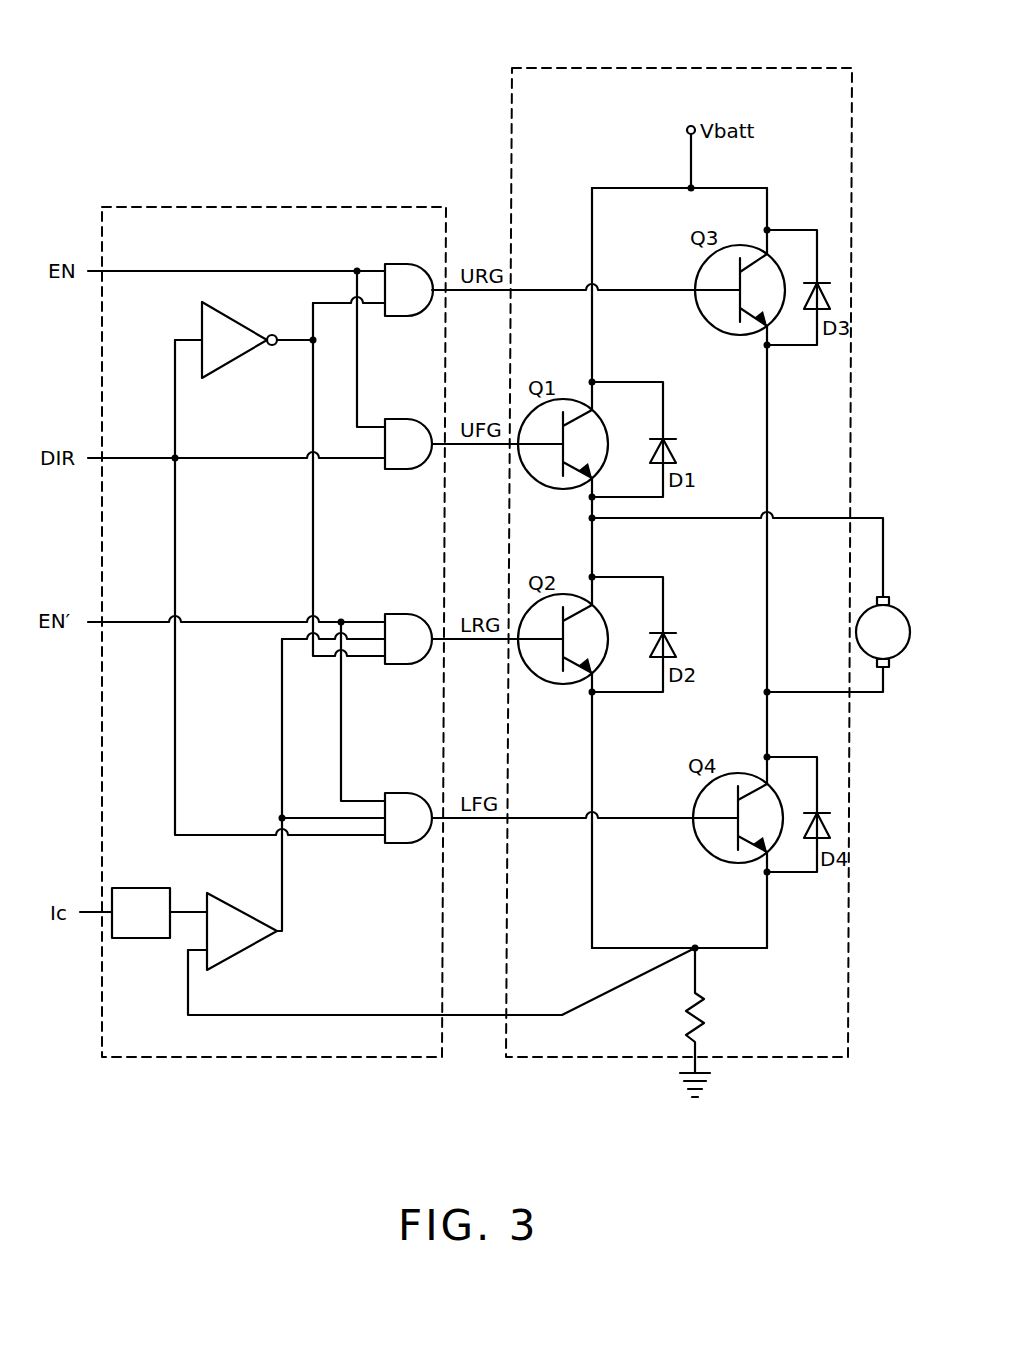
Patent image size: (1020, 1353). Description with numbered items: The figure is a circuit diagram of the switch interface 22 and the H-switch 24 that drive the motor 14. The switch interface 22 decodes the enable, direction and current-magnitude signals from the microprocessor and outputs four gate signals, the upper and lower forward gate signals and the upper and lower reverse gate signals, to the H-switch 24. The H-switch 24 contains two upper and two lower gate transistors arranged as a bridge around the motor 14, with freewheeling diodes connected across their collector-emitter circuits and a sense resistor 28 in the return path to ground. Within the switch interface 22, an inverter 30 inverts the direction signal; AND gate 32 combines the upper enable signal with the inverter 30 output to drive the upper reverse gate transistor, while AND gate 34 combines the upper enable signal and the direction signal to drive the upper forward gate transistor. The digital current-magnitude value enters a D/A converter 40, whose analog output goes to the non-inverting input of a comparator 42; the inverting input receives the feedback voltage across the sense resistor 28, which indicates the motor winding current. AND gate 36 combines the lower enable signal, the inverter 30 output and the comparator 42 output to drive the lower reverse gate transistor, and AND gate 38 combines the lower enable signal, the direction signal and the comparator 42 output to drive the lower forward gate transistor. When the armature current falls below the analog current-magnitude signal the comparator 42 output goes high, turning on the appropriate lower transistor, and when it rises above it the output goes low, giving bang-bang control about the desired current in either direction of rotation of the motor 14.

The motor 14 is at (868, 608).
The switch interface 22 is at (262, 205).
The H-switch 24 is at (714, 66).
The sense resistor 28 is at (700, 1007).
The inverter 30 is at (233, 348).
The AND gate 32 is at (412, 298).
The AND gate 34 is at (412, 455).
The AND gate 36 is at (397, 650).
The AND gate 38 is at (398, 828).
The D/A converter 40 is at (143, 932).
The comparator 42 is at (243, 943).